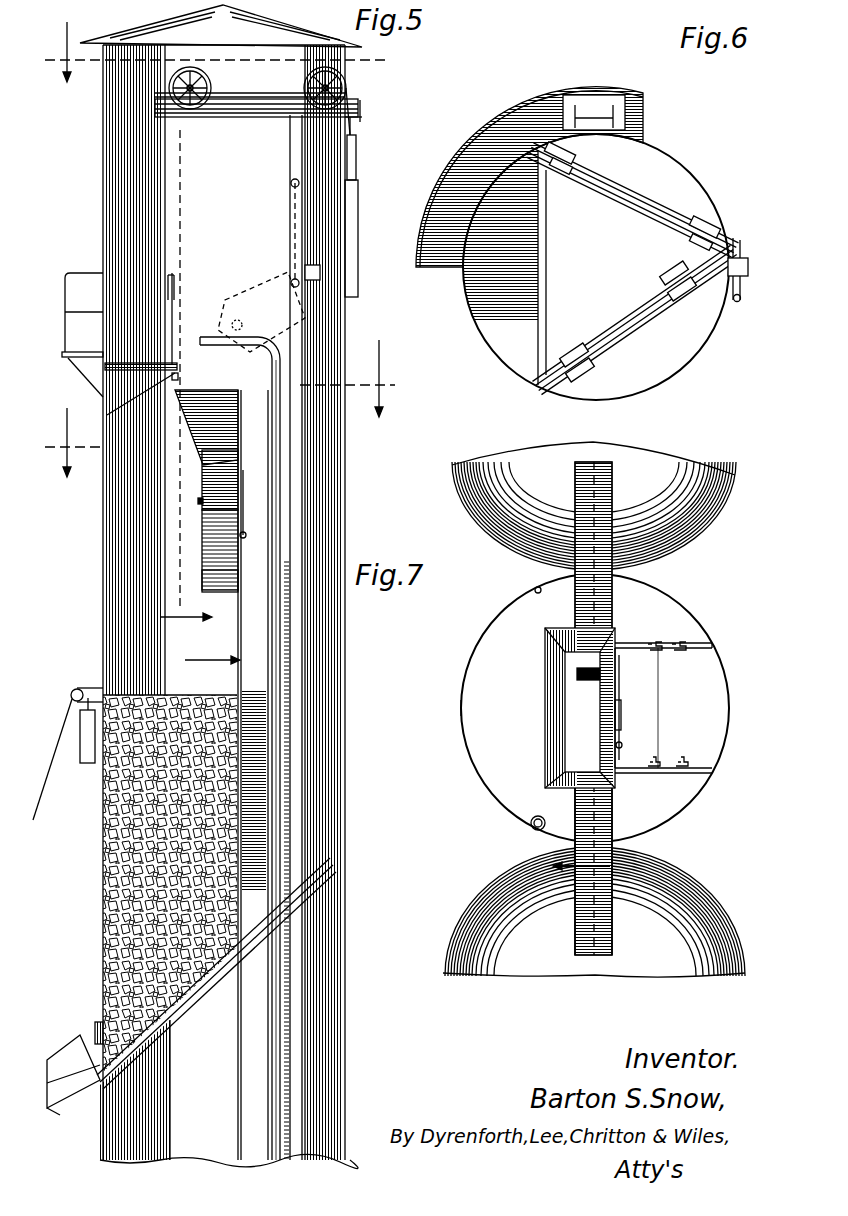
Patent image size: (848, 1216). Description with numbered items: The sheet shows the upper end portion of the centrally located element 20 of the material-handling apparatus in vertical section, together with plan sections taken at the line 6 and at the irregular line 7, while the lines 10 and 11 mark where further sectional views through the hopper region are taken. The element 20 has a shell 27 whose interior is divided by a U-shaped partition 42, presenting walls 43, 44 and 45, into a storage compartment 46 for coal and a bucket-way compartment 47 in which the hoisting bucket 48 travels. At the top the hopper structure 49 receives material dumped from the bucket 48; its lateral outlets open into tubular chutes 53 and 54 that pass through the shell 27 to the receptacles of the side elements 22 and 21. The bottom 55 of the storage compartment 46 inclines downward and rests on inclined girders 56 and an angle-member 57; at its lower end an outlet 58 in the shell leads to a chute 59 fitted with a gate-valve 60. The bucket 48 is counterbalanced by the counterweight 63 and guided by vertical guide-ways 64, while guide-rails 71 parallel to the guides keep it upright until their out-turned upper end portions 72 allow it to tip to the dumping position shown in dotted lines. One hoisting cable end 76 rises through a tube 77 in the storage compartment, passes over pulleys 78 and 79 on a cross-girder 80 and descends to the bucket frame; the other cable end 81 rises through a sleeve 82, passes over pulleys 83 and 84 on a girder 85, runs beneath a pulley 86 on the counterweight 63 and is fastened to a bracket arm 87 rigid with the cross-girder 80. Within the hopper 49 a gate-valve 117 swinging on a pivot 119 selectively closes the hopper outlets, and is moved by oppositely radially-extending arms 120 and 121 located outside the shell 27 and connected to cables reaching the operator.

In FIG. 5, the section line 6 is at (212, 52).
In FIG. 5, the irregular section line 7 is at (224, 408).
In FIG. 5, the section line 10 is at (200, 638).
In FIG. 5, the section line 11 is at (170, 682).
In FIG. 7, the section line 11 is at (581, 879).
In FIG. 5, the centrally located element 20 is at (103, 186).
In FIG. 6, the centrally located element 20 is at (700, 180).
In FIG. 7, the centrally located element 20 is at (461, 690).
In FIG. 7, the receptacle-forming element 21 is at (525, 968).
In FIG. 7, the receptacle-forming element 22 is at (515, 462).
In FIG. 5, the shell 27 is at (343, 530).
In FIG. 6, the shell 27 is at (682, 370).
In FIG. 7, the shell 27 is at (729, 710).
In FIG. 7, the partition 42 is at (655, 643).
In FIG. 7, the partition wall 43 is at (640, 772).
In FIG. 7, the partition wall 44 is at (660, 700).
In FIG. 7, the partition wall 45 is at (690, 645).
In FIG. 5, the storage compartment 46 is at (190, 263).
In FIG. 7, the storage compartment 46 is at (545, 700).
In FIG. 7, the bucket-way compartment 47 is at (661, 707).
In FIG. 5, the hoisting bucket 48 is at (240, 300).
In FIG. 5, the hopper structure 49 is at (221, 775).
In FIG. 7, the hopper structure 49 is at (555, 672).
In FIG. 5, the tubular chute 53 is at (236, 585).
In FIG. 7, the tubular chute 53 is at (600, 610).
In FIG. 7, the tubular chute 54 is at (605, 815).
In FIG. 5, the bottom of storage receptacle 55 is at (178, 1012).
In FIG. 5, the inclined girders 56 is at (224, 970).
In FIG. 5, the angle-member 57 is at (105, 1090).
In FIG. 5, the outlet 58 is at (97, 1025).
In FIG. 5, the chute 59 is at (73, 1095).
In FIG. 5, the gate-valve 60 is at (70, 1045).
In FIG. 5, the counterweight 63 is at (358, 225).
In FIG. 5, the vertical guide-ways 64 is at (303, 460).
In FIG. 7, the vertical guide-ways 64 is at (680, 652).
In FIG. 5, the guide-rails 71 is at (282, 488).
In FIG. 7, the guide-rails 71 is at (658, 652).
In FIG. 5, the out-turned upper end portions 72 is at (220, 336).
In FIG. 7, the cable end 76 is at (532, 828).
In FIG. 7, the tube 77 is at (537, 820).
In FIG. 6, the pulley 78 is at (575, 340).
In FIG. 6, the pulley 79 is at (660, 280).
In FIG. 6, the cross-girder 80 is at (625, 338).
In FIG. 5, the cable end 81 is at (230, 90).
In FIG. 6, the cable end 81 is at (605, 185).
In FIG. 5, the sleeve 82 is at (178, 366).
In FIG. 7, the sleeve 82 is at (538, 578).
In FIG. 5, the pulley 83 is at (212, 88).
In FIG. 6, the pulley 83 is at (585, 170).
In FIG. 5, the pulley 84 is at (305, 85).
In FIG. 6, the pulley 84 is at (690, 228).
In FIG. 5, the girder 85 is at (262, 117).
In FIG. 6, the girder 85 is at (645, 195).
In FIG. 5, the pulley 86 is at (358, 128).
In FIG. 6, the pulley 86 is at (742, 256).
In FIG. 5, the bracket arm 87 is at (362, 115).
In FIG. 6, the bracket arm 87 is at (736, 302).
In FIG. 5, the gate-valve 117 is at (202, 483).
In FIG. 5, the pivot 119 is at (200, 502).
In FIG. 5, the radially-extending arm 120 is at (244, 475).
In FIG. 7, the radially-extending arm 120 is at (622, 710).
In FIG. 5, the radially-extending arm 121 is at (243, 530).
In FIG. 7, the radially-extending arm 121 is at (622, 744).